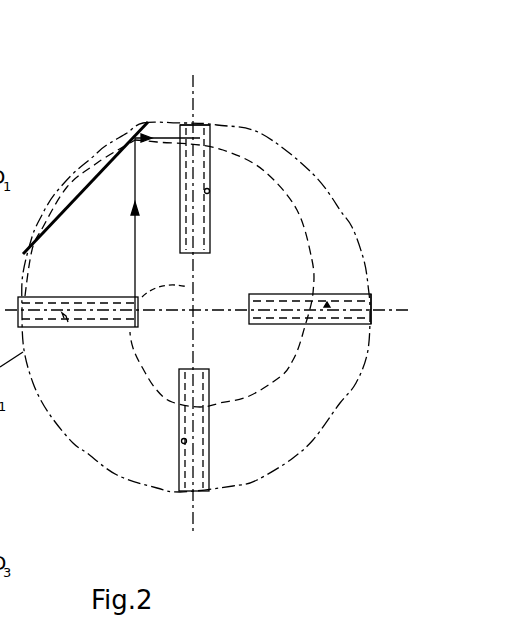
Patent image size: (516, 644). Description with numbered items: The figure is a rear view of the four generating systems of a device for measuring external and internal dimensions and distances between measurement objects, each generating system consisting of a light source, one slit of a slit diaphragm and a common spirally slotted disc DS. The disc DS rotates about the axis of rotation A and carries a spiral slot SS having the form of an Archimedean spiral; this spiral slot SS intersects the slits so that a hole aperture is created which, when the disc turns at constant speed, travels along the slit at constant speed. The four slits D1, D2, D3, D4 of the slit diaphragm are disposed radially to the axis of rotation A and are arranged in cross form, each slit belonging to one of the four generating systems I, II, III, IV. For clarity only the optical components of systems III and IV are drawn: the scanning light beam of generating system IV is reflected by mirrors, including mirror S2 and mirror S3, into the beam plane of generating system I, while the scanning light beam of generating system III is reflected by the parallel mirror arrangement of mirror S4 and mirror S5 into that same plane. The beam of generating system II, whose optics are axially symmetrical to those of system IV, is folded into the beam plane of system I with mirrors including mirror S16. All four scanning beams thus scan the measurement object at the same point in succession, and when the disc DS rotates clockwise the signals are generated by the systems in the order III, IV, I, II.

The spirally slotted disc DS is at (350, 228).
The spiral slot SS is at (293, 361).
The mirror S2 is at (131, 135).
The mirror S3 is at (212, 128).
The mirror S4 is at (210, 463).
The mirror S5 is at (203, 124).
The mirror S16 is at (367, 295).
The slit D1 is at (209, 189).
The slit D2 is at (338, 294).
The slit D3 is at (181, 446).
The slit D4 is at (68, 322).
The axis of rotation A is at (194, 306).
The generating system I is at (202, 264).
The generating system II is at (237, 322).
The generating system III is at (205, 358).
The generating system IV is at (154, 323).